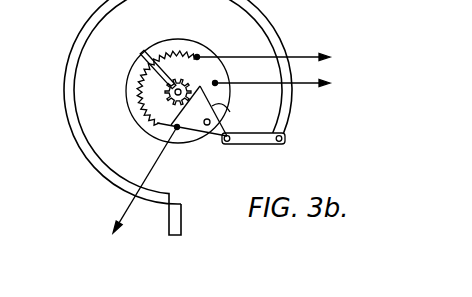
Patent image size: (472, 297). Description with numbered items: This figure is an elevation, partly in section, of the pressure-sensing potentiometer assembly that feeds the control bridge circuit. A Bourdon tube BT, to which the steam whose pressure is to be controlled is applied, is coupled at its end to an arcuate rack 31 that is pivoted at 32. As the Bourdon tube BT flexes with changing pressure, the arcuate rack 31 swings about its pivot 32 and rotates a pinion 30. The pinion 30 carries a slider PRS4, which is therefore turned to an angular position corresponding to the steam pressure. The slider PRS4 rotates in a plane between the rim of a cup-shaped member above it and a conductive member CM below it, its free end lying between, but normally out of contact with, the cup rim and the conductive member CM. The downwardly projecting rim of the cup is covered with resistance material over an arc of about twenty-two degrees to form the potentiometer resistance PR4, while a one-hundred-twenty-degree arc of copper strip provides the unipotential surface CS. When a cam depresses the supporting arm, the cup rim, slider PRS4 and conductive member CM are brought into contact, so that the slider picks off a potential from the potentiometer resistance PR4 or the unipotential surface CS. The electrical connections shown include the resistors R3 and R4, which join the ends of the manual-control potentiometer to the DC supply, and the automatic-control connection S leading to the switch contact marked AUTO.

The Bourdon tube BT is at (80, 152).
The conductive member CM is at (132, 69).
The potentiometer resistance PR4 is at (130, 100).
The slider PRS4 is at (149, 48).
The pinion 30 is at (188, 82).
The arcuate rack 31 is at (228, 106).
The pivot 32 is at (206, 125).
The unipotential surface CS is at (177, 127).
The resistor R3 is at (121, 228).
The resistor R4 is at (279, 56).
The automatic signal S AUTO S is at (295, 92).